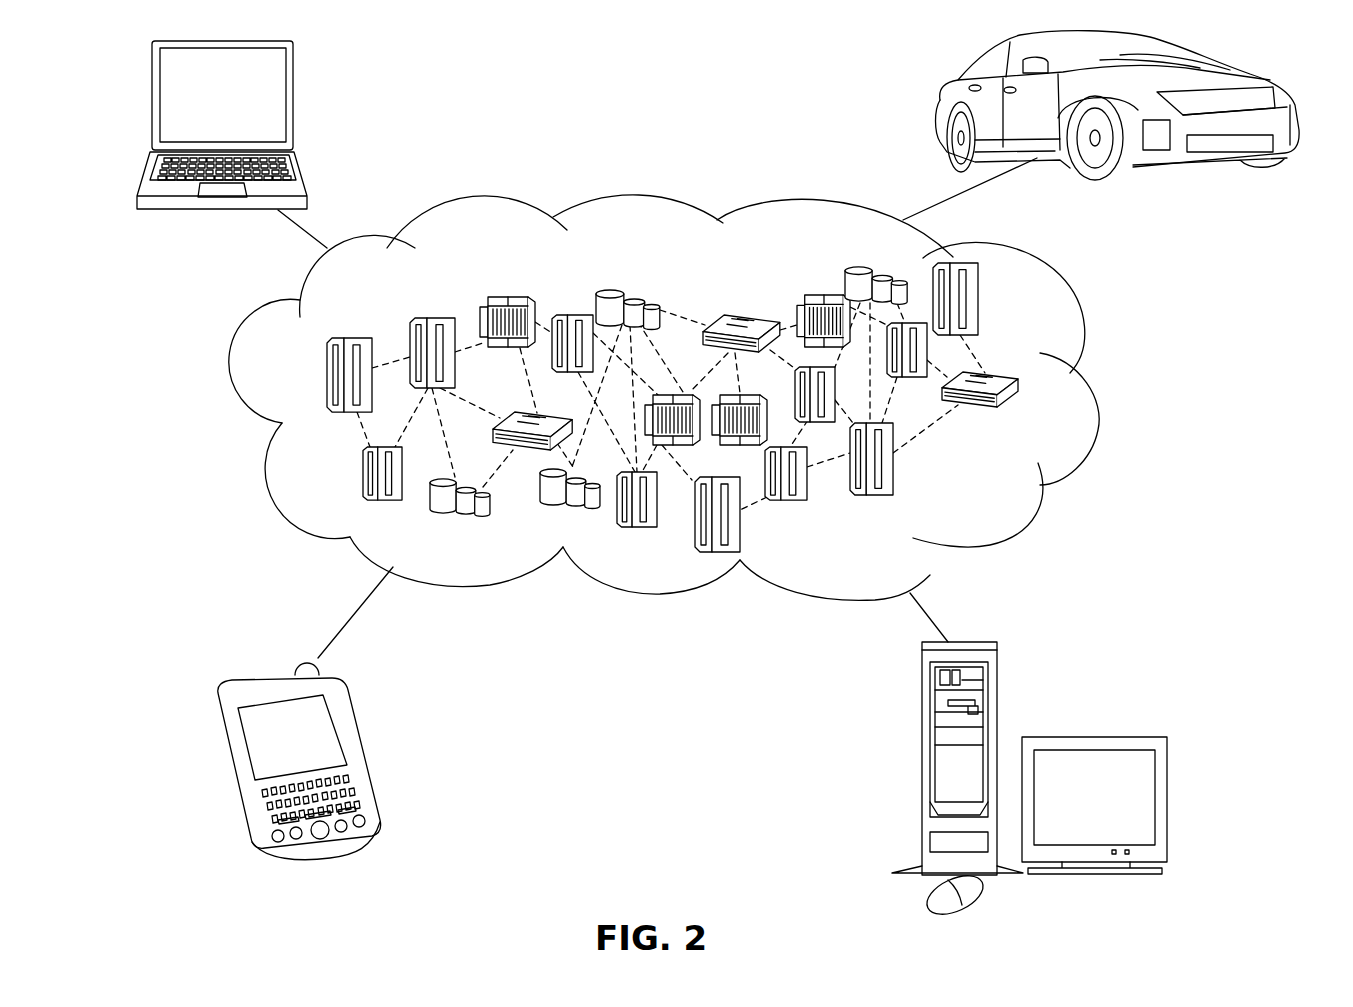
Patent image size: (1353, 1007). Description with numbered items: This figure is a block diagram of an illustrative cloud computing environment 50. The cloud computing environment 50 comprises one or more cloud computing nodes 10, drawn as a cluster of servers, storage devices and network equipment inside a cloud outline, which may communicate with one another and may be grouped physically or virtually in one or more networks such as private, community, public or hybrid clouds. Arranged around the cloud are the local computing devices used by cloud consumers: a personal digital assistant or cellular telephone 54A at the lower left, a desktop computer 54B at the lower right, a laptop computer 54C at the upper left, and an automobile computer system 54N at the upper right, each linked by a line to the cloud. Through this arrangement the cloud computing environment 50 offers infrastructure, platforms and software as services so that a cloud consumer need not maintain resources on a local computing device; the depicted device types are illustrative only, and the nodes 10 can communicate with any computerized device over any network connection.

The cloud computing nodes 10 is at (1008, 492).
The cloud computing environment 50 is at (1090, 390).
The personal digital assistant or cellular telephone 54A is at (350, 718).
The desktop computer 54B is at (921, 702).
The laptop computer 54C is at (293, 78).
The automobile computer system 54N is at (933, 97).